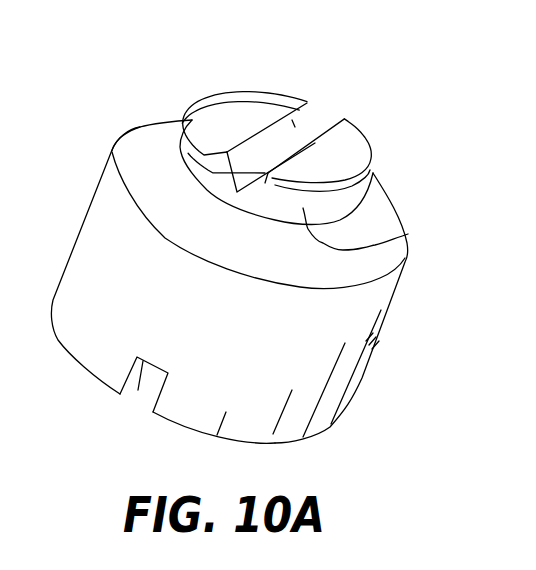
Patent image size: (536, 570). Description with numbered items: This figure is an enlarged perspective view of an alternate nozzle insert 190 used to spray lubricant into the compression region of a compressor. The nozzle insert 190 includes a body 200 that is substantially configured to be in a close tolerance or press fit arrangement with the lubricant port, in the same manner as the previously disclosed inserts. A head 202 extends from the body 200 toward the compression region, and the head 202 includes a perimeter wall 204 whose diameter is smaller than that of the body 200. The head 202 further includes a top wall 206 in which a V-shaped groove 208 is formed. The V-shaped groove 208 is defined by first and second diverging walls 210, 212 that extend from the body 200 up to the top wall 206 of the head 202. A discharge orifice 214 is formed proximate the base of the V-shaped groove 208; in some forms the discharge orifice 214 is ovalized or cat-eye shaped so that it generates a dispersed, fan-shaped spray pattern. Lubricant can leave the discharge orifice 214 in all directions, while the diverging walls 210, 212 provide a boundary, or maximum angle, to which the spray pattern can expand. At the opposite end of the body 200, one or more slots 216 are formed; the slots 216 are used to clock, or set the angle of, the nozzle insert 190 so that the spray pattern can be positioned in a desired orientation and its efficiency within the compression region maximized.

The nozzle insert 190 is at (374, 343).
The body 200 is at (347, 417).
The head 202 is at (368, 197).
The perimeter wall 204 is at (410, 238).
The top wall 206 is at (343, 160).
The V-shaped groove 208 is at (137, 127).
The first diverging wall 210 is at (318, 136).
The second diverging wall 212 is at (318, 147).
The discharge orifice 214 is at (265, 162).
The slot 216 is at (139, 389).